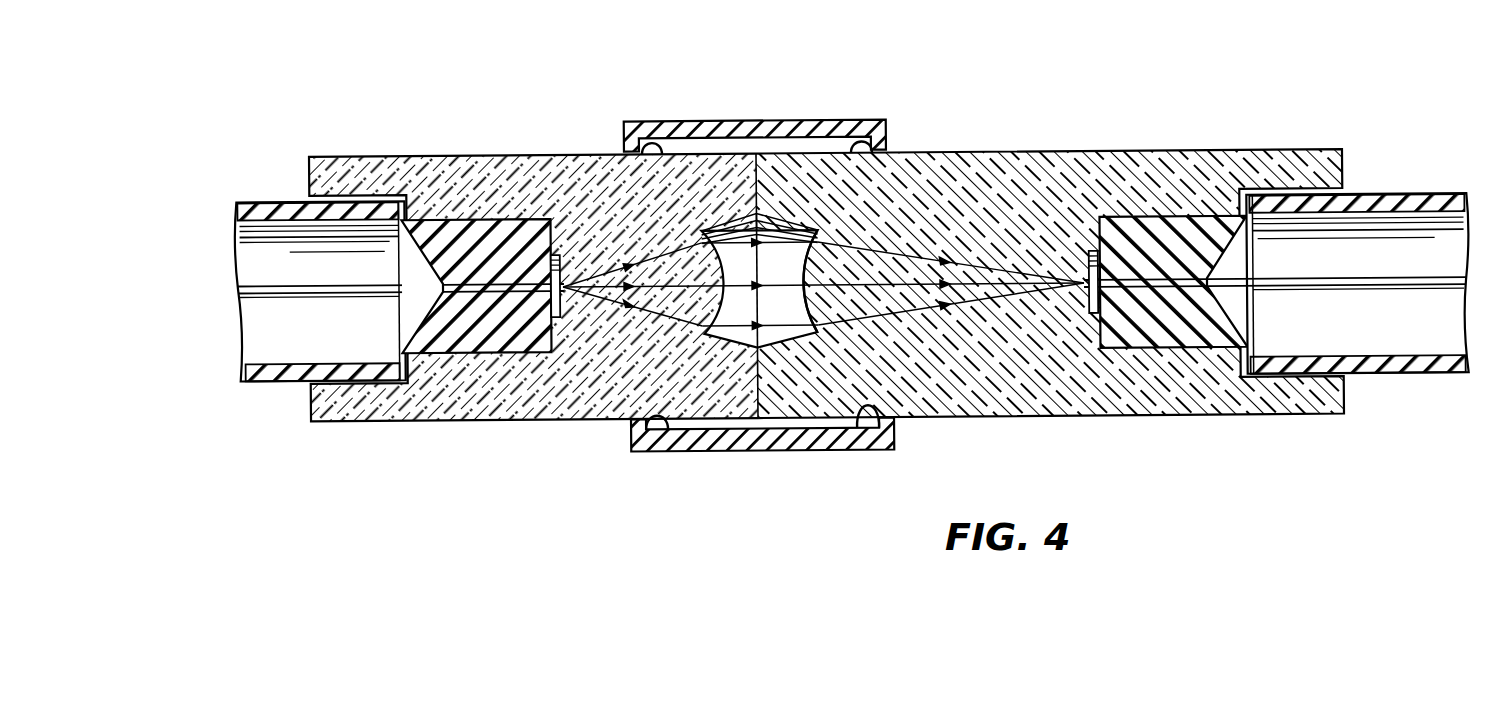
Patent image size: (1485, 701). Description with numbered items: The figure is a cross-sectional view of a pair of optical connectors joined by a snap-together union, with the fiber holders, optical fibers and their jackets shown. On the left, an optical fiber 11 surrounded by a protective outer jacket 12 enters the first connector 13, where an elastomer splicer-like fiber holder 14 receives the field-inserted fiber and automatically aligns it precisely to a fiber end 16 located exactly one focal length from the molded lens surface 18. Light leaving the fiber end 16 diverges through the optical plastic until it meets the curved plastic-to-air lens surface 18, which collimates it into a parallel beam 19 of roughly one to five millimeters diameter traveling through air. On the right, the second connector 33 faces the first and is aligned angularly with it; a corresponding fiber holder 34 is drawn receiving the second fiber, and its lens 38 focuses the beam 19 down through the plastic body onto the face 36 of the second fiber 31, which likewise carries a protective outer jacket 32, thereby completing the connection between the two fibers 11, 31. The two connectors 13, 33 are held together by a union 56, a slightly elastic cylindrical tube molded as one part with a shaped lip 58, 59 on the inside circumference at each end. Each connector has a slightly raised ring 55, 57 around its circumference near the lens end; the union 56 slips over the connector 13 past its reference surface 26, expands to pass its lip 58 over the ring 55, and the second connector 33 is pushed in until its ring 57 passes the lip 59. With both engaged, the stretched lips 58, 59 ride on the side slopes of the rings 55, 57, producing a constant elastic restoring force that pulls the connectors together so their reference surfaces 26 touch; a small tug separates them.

The optical fiber 11 is at (283, 281).
The protective outer jacket 12 is at (292, 198).
The connector 13 is at (462, 138).
The fiber holder 14 is at (483, 337).
The fiber end 16 is at (565, 282).
The lens surface 18 is at (724, 300).
The parallel beam 19 is at (792, 243).
The reference surface 26 is at (762, 388).
The second fiber 31 is at (1395, 281).
The protective outer jacket 32 is at (1413, 199).
The second connector 33 is at (993, 136).
The second ferrule 34 is at (1176, 232).
The face of the second fiber 36 is at (1082, 284).
The lens 38 is at (803, 306).
The raised ring 55 is at (632, 416).
The union 56 is at (770, 451).
The raised ring 57 is at (893, 420).
The lip 58 is at (627, 148).
The lip 59 is at (888, 150).